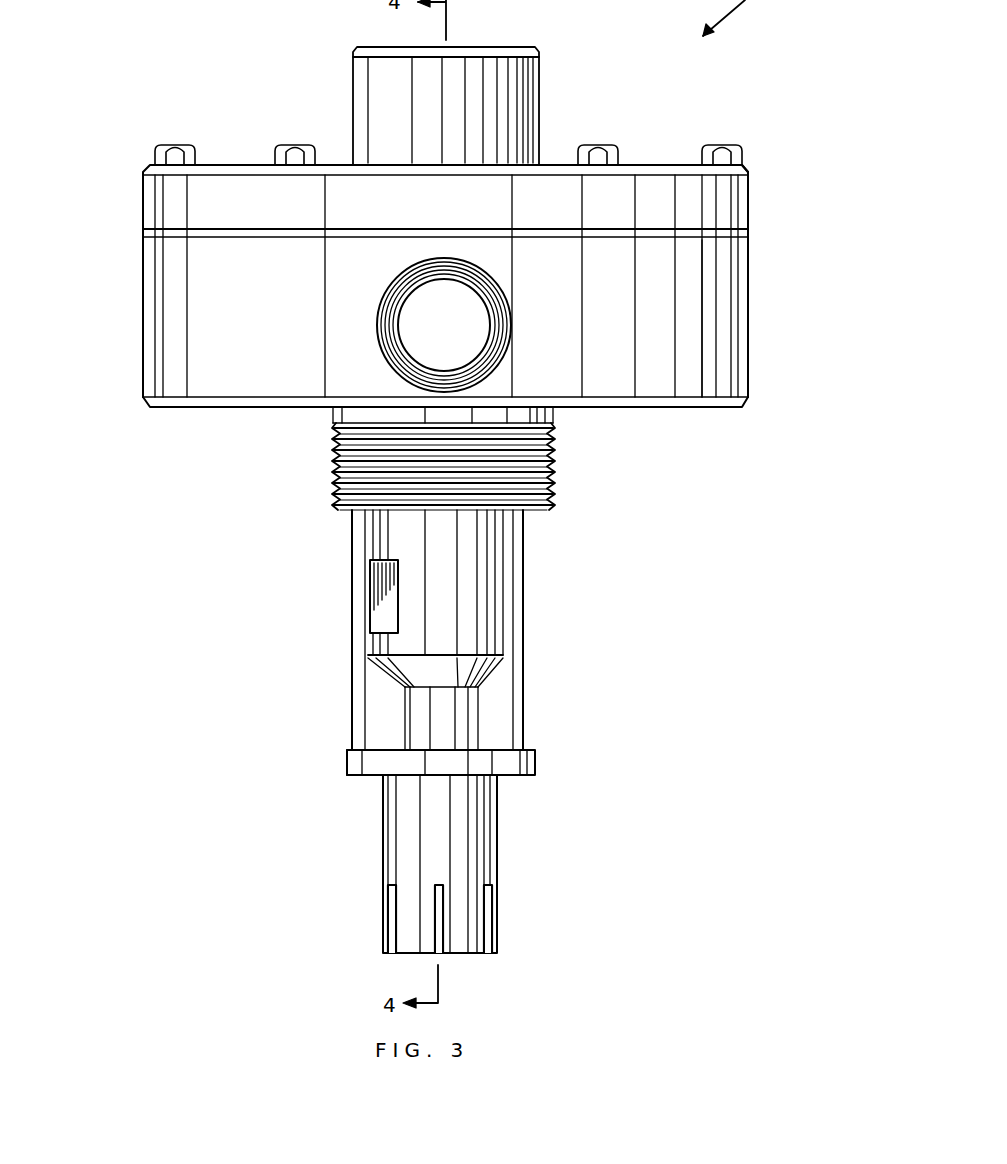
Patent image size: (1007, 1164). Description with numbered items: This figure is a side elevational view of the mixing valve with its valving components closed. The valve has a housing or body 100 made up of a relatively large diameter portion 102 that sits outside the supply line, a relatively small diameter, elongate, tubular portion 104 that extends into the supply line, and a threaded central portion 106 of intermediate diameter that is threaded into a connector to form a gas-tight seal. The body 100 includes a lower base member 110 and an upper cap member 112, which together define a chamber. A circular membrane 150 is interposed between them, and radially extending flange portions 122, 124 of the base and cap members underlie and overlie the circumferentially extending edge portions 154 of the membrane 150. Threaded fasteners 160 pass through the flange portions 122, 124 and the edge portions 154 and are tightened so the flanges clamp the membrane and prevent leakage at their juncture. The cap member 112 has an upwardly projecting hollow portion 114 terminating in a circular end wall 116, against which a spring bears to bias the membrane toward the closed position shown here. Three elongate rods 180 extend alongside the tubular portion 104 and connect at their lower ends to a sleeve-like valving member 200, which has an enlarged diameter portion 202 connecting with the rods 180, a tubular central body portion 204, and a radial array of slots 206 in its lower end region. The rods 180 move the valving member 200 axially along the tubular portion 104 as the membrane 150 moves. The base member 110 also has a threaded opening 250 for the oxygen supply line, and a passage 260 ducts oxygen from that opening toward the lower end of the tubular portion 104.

The body 100 is at (752, 205).
The large diameter portion 102 is at (143, 289).
The tubular portion 104 is at (481, 711).
The threaded central portion 106 is at (562, 462).
The base member 110 is at (740, 298).
The cap member 112 is at (733, 222).
The hollow portion 114 is at (541, 93).
The end wall 116 is at (492, 47).
The flange portion 122 is at (722, 347).
The flange portion 124 is at (734, 193).
The membrane 150 is at (748, 240).
The edge portions 154 is at (258, 210).
The threaded fasteners 160 is at (165, 145).
The rods 180 is at (352, 586).
The sleeve-like valving member 200 is at (537, 765).
The enlarged diameter portion 202 is at (356, 771).
The tubular central body portion 204 is at (478, 830).
The slots 206 is at (438, 933).
The threaded opening 250 is at (408, 355).
The passage 260 is at (425, 327).